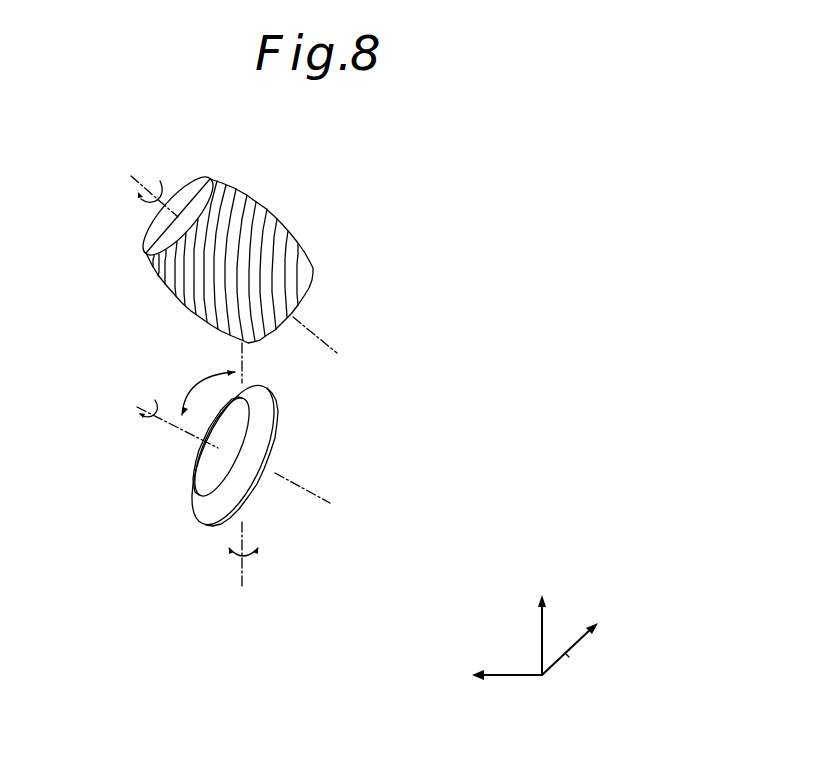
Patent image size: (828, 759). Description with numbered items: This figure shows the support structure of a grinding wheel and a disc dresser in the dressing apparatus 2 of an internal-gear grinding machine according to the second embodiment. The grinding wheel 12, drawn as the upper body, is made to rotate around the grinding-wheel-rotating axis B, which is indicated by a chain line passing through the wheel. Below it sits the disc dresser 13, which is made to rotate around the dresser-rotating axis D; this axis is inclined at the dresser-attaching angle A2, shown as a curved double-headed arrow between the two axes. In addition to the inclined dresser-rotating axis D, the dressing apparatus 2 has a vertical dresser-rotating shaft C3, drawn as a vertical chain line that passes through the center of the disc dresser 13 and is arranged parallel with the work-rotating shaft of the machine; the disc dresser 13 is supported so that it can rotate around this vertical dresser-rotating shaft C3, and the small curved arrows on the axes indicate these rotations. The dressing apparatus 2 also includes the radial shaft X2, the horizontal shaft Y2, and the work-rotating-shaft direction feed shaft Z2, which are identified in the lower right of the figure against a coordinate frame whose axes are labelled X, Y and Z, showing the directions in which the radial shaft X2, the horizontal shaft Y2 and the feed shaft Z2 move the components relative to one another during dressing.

The dressing apparatus 2 is at (418, 187).
The grinding wheel 12 is at (248, 193).
The disc dresser 13 is at (278, 411).
The grinding-wheel-rotating axis B is at (220, 249).
The dresser-rotating axis D is at (221, 442).
The vertical dresser-rotating shaft C3 is at (243, 479).
The dresser-attaching angle A2 is at (203, 385).
The X axis X is at (580, 637).
The Y axis Y is at (495, 677).
The Z axis Z is at (543, 621).
The radial shaft X2 is at (567, 655).
The horizontal shaft Y2 is at (508, 675).
The work-rotating-shaft direction feed shaft Z2 is at (542, 638).